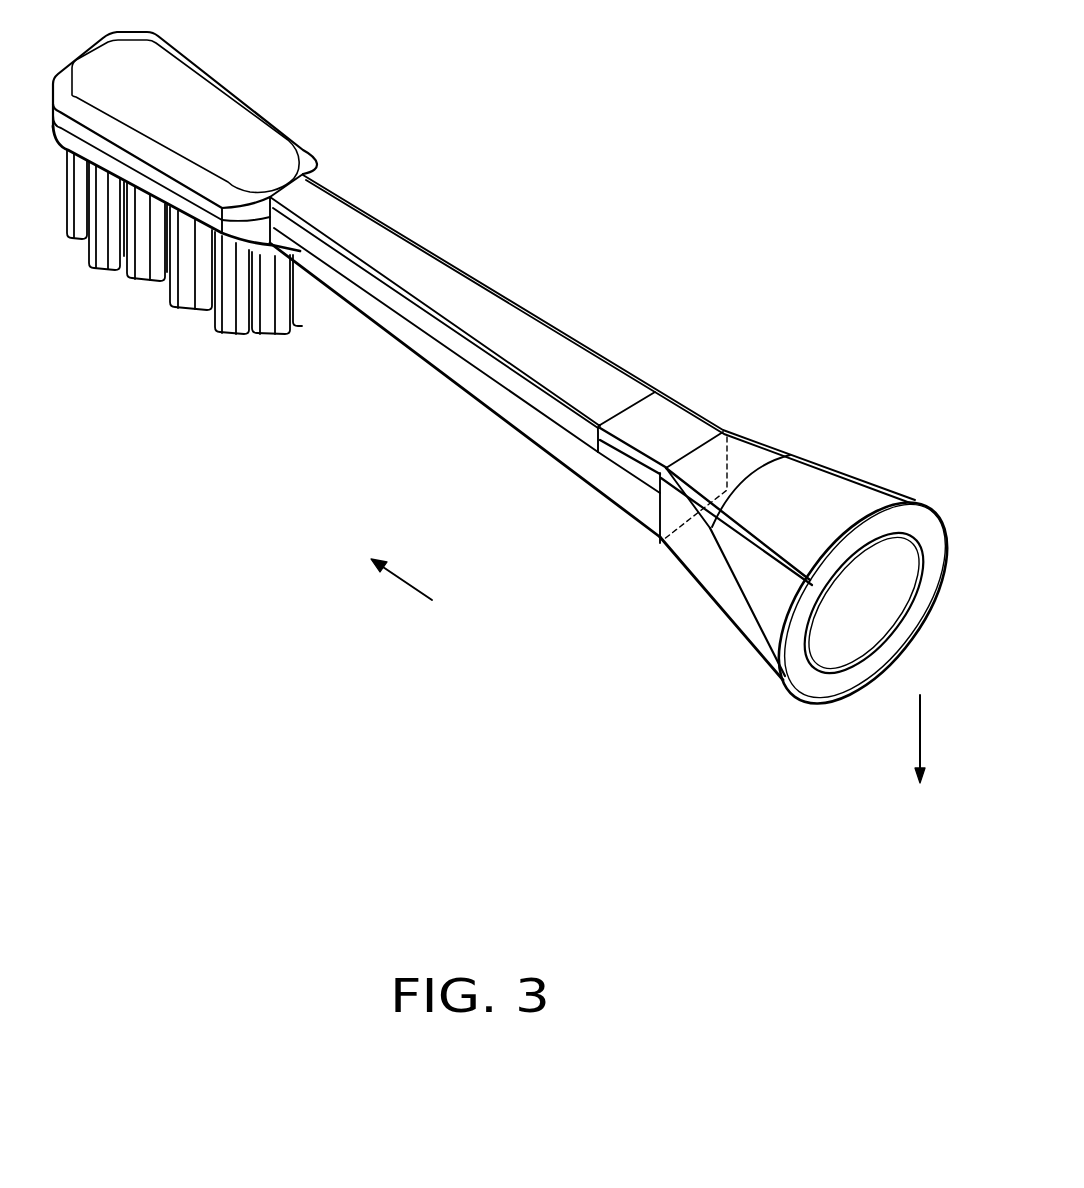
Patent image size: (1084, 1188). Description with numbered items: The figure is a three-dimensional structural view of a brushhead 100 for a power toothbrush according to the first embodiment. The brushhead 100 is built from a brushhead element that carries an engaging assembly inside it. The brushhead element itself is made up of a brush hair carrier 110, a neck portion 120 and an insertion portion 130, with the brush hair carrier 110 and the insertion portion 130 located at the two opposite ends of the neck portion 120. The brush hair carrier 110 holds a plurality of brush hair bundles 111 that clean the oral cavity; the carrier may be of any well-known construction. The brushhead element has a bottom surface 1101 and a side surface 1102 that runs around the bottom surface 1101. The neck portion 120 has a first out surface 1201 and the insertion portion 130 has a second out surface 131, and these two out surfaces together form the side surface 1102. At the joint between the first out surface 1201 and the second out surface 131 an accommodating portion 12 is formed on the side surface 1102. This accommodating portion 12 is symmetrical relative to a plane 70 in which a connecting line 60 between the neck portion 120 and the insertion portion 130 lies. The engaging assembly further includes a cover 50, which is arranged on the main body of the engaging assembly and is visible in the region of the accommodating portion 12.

The brushhead 100 is at (655, 62).
The brush hair carrier 110 is at (226, 126).
The brush hair bundles 111 is at (158, 258).
The neck portion 120 is at (592, 355).
The first out surface 1201 is at (568, 345).
The side surface 1102 is at (572, 383).
The accommodating portion 12 is at (605, 460).
The cover 50 is at (665, 422).
The connecting line 60 is at (657, 493).
The plane 70 is at (684, 508).
The second out surface 131 is at (808, 475).
The insertion portion 130 is at (848, 493).
The bottom surface 1101 is at (800, 663).